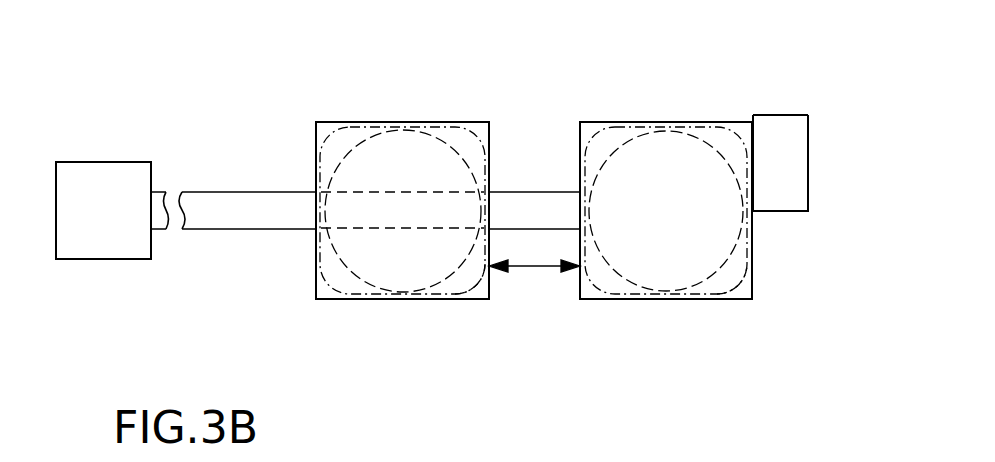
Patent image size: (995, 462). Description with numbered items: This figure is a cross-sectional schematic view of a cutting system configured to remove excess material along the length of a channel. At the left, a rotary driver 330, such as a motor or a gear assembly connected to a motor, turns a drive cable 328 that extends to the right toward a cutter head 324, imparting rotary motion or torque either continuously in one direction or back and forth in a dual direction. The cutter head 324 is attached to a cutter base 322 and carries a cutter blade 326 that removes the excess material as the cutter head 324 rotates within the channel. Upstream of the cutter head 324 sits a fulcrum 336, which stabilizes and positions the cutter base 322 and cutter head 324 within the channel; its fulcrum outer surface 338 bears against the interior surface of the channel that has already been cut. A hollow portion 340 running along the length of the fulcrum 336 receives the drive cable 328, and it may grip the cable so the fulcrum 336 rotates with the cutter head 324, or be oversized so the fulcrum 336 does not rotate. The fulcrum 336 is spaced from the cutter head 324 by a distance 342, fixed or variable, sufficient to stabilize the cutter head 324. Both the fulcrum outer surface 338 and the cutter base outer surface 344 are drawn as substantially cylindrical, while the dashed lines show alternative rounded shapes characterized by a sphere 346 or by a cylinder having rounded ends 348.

The cutter base 322 is at (630, 128).
The cutter head 324 is at (798, 150).
The cutter blade 326 is at (795, 115).
The drive cable 328 is at (220, 203).
The rotary driver 330 is at (97, 180).
The fulcrum 336 is at (378, 162).
The fulcrum outer surface 338 is at (418, 121).
The hollow portion 340 is at (385, 230).
The distance 342 is at (538, 265).
The cutter base outer surface 344 is at (697, 122).
The sphere 346 is at (450, 273).
The rounded ends 348 is at (472, 288).